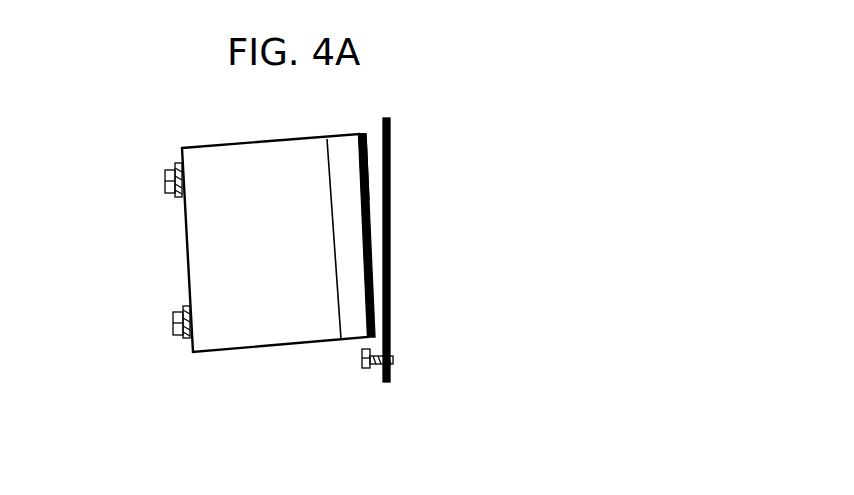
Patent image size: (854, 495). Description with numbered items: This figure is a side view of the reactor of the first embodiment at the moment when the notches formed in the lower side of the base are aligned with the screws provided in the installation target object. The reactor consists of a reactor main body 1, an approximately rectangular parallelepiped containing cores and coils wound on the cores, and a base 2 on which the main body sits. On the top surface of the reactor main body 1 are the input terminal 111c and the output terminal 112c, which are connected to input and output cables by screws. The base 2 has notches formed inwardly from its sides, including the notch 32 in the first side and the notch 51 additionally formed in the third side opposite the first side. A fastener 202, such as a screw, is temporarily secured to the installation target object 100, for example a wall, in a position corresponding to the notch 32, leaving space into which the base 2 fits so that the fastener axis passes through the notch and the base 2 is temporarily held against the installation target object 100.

The reactor main body 1 is at (273, 253).
The base 2 is at (362, 217).
The notch 51 is at (358, 155).
The installation target object 100 is at (390, 138).
The output terminal 112c is at (163, 182).
The input terminal 111c is at (172, 322).
The notch 32 is at (367, 323).
The fastener 202 is at (362, 362).